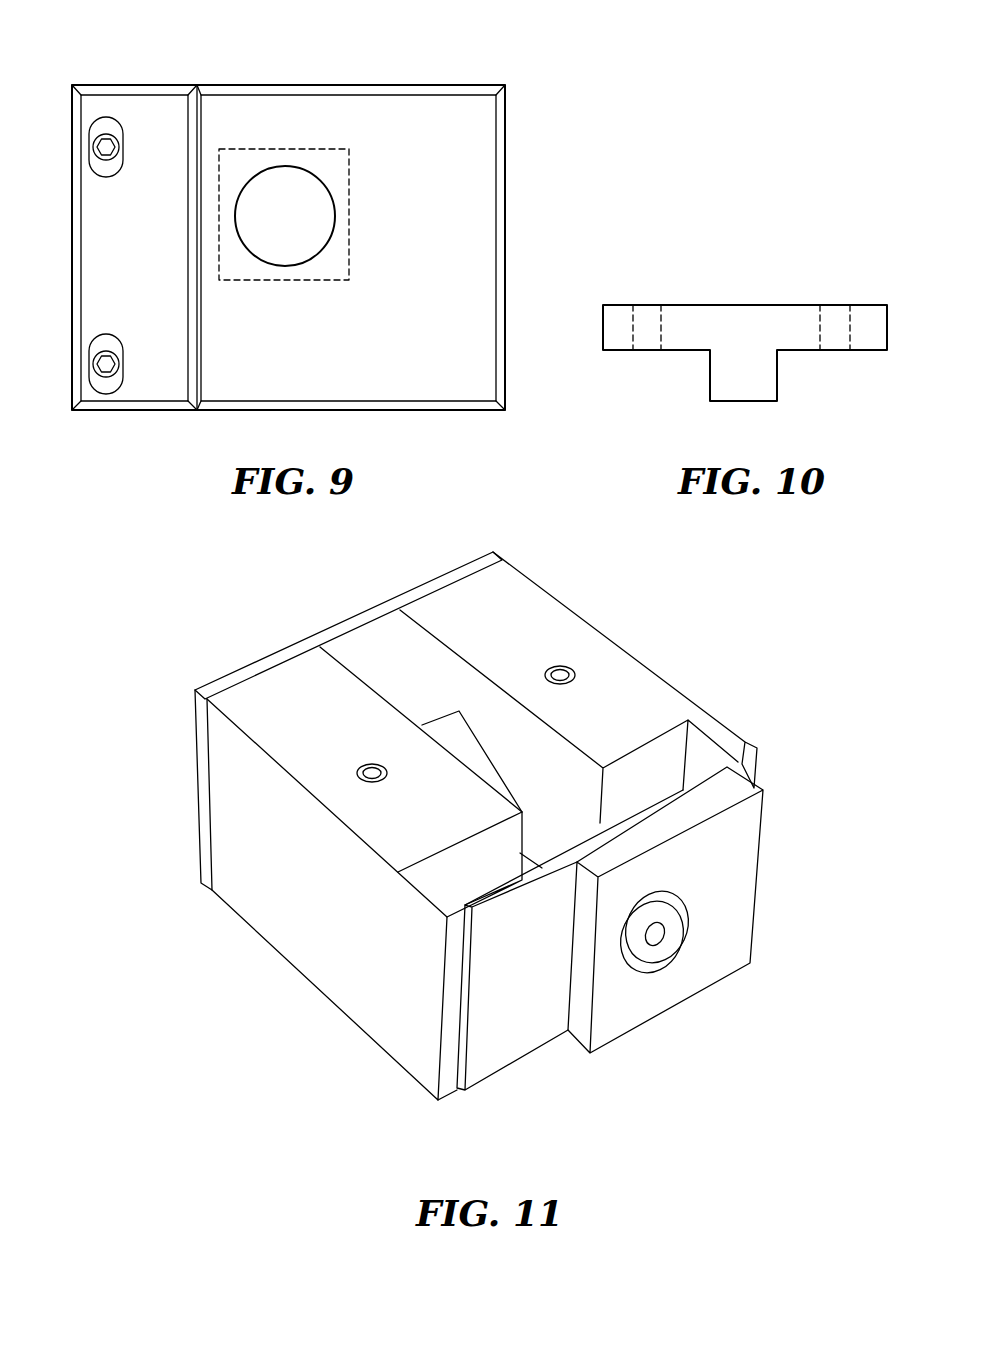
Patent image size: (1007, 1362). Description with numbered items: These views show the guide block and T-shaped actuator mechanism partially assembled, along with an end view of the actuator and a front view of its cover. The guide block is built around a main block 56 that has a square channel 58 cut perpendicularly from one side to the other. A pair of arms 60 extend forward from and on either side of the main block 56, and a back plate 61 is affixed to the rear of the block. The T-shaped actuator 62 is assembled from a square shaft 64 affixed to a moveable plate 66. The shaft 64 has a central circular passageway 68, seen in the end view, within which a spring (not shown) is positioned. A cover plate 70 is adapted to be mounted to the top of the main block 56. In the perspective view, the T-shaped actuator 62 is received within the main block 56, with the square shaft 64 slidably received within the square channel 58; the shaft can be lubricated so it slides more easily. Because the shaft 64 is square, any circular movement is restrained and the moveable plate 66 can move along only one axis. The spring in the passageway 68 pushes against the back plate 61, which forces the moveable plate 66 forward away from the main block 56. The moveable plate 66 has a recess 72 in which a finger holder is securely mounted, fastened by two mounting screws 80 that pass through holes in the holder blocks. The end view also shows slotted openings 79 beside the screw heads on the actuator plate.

In FIG. 11, the main block 56 is at (617, 672).
In FIG. 11, the square channel 58 is at (358, 673).
In FIG. 11, the arms 60 is at (738, 747).
In FIG. 11, the back plate 61 is at (200, 763).
In FIG. 9, the T-shaped actuator 62 is at (481, 79).
In FIG. 11, the T-shaped actuator 62 is at (455, 733).
In FIG. 11, the square shaft 64 is at (573, 748).
In FIG. 11, the moveable plate 66 is at (742, 892).
In FIG. 9, the central circular passageway 68 is at (323, 178).
In FIG. 10, the cover plate 70 is at (795, 347).
In FIG. 11, the recess 72 is at (523, 1062).
In FIG. 9, the slotted hole 79 is at (102, 126).
In FIG. 9, the mounting screws 80 is at (102, 150).